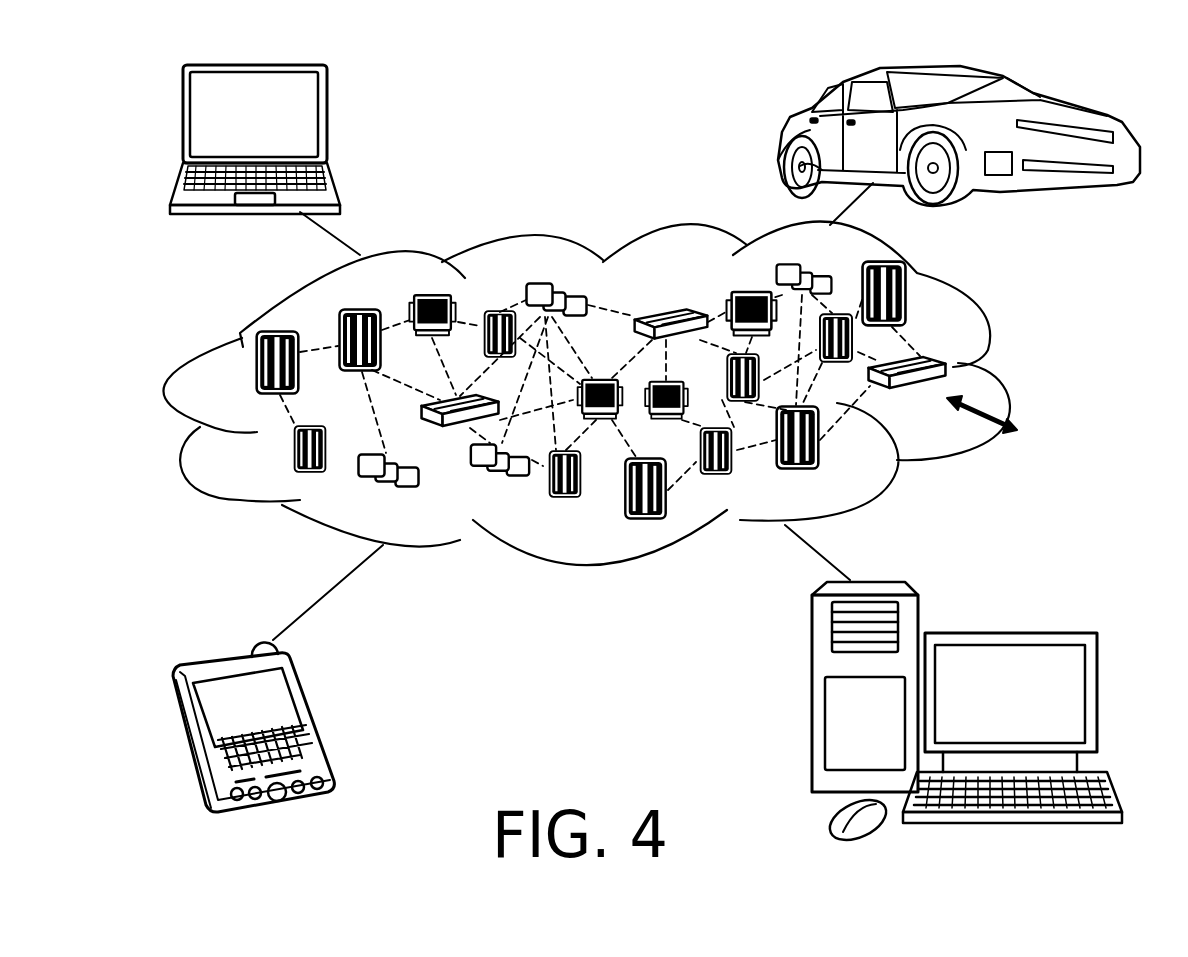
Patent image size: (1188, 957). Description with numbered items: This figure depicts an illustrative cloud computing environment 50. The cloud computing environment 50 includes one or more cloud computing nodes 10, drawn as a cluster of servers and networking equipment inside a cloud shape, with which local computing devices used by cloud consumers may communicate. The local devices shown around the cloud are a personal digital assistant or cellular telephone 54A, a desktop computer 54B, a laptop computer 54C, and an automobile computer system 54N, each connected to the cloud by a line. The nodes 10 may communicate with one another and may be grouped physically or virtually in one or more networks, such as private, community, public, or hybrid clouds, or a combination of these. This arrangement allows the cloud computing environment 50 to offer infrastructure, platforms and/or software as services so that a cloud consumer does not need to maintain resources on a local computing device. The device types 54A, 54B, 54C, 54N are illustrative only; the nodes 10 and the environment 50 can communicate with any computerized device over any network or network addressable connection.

The cloud computing environment 50 is at (1008, 377).
The cloud computing nodes 10 is at (997, 419).
The personal digital assistant or cellular telephone 54A is at (317, 718).
The desktop computer 54B is at (1008, 633).
The laptop computer 54C is at (327, 122).
The automobile computer system 54N is at (777, 137).